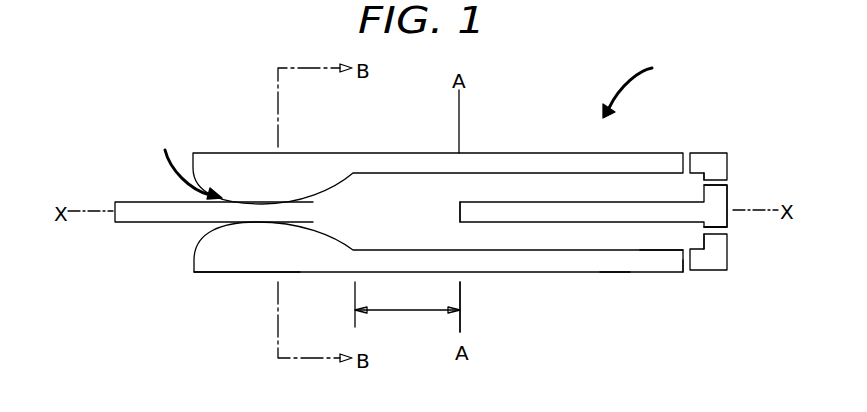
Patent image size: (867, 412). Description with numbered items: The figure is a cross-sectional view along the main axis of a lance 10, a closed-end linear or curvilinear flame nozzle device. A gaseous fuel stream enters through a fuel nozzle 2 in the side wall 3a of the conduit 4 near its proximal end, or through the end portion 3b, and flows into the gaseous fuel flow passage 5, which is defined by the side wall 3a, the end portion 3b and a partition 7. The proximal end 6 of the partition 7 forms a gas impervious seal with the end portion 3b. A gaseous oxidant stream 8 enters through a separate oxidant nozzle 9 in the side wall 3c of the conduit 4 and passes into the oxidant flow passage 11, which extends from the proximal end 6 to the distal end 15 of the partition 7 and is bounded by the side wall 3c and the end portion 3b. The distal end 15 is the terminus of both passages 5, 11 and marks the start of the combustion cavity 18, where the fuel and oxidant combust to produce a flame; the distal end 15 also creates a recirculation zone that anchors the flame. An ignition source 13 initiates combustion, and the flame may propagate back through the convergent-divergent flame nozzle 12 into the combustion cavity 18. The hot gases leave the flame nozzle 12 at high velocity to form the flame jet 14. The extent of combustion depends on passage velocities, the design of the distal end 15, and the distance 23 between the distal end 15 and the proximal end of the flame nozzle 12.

The fuel nozzle 2 is at (685, 152).
The side wall 3a is at (508, 153).
The end portion 3b is at (728, 266).
The side wall 3c is at (562, 272).
The conduit 4 is at (612, 272).
The gaseous fuel flow passage 5 is at (657, 190).
The proximal end 6 is at (697, 210).
The partition 7 is at (558, 202).
The gaseous oxidant stream 8 is at (722, 227).
The oxidant nozzle 9 is at (718, 180).
The lance 10 is at (638, 90).
The oxidant flow passage 11 is at (645, 237).
The flame nozzle 12 is at (227, 274).
The ignition source 13 is at (189, 162).
The flame jet 14 is at (130, 202).
The distal end 15 is at (460, 212).
The combustion cavity 18 is at (424, 224).
The distance 23 is at (460, 300).